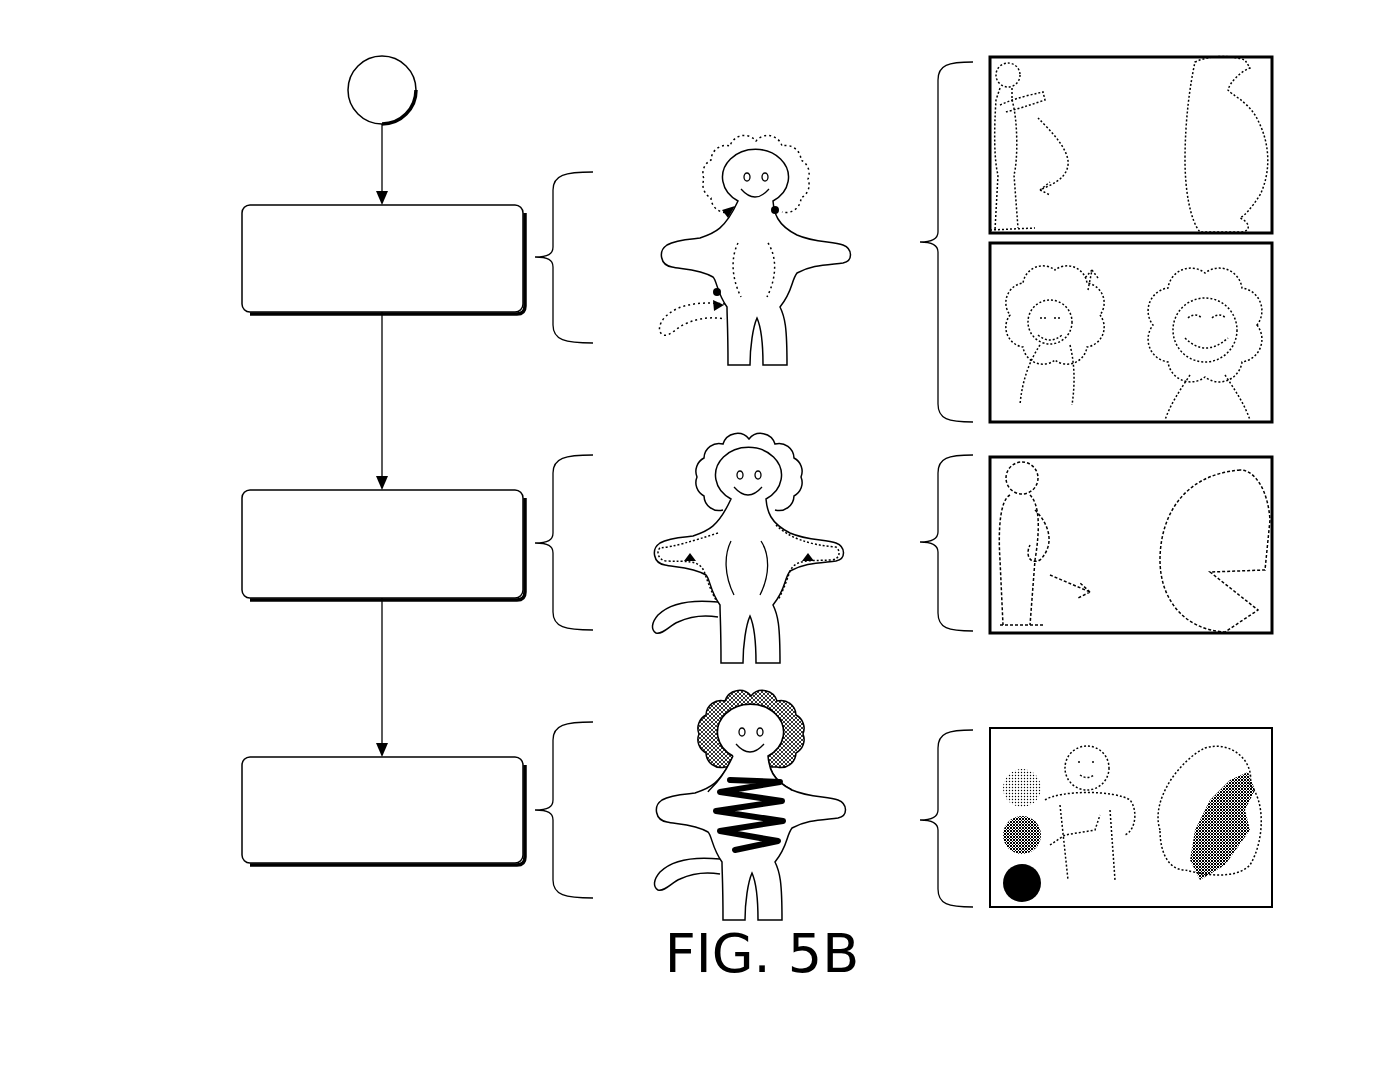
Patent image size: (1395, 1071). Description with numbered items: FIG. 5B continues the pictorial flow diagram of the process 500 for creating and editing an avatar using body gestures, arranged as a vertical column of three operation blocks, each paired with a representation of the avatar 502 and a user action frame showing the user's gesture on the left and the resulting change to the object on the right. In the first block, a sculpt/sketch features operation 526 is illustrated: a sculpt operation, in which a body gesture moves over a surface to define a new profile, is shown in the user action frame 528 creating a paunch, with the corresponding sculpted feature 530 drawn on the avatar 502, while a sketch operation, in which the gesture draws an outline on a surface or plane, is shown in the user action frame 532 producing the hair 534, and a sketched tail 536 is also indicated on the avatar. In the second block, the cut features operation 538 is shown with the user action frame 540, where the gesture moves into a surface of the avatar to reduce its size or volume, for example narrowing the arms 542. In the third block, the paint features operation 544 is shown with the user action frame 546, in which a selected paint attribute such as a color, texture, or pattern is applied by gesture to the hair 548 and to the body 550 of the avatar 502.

The process 500 is at (208, 88).
The avatar 502 is at (788, 300).
The sculpt/sketch features step 526 is at (383, 259).
The user action frame 528 is at (1272, 118).
The sculpted feature 530 is at (786, 251).
The user action frame 532 is at (1272, 311).
The hair 534 is at (704, 176).
The tail 536 is at (682, 306).
The cut features operation 538 is at (383, 545).
The user action frame 540 is at (1272, 511).
The arms 542 is at (829, 526).
The paint features operation 544 is at (383, 811).
The user action frame 546 is at (1272, 776).
The hair 548 is at (811, 721).
The body 550 is at (794, 793).